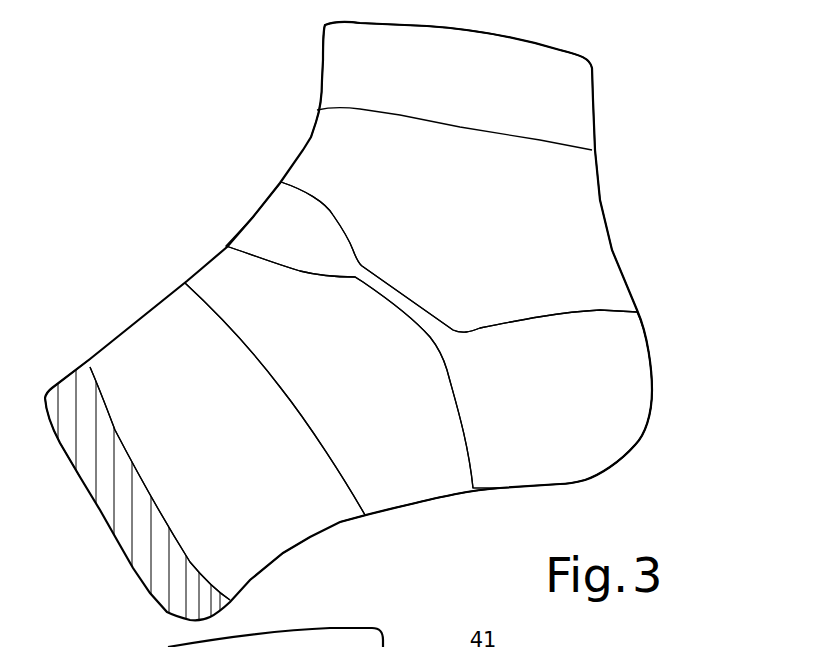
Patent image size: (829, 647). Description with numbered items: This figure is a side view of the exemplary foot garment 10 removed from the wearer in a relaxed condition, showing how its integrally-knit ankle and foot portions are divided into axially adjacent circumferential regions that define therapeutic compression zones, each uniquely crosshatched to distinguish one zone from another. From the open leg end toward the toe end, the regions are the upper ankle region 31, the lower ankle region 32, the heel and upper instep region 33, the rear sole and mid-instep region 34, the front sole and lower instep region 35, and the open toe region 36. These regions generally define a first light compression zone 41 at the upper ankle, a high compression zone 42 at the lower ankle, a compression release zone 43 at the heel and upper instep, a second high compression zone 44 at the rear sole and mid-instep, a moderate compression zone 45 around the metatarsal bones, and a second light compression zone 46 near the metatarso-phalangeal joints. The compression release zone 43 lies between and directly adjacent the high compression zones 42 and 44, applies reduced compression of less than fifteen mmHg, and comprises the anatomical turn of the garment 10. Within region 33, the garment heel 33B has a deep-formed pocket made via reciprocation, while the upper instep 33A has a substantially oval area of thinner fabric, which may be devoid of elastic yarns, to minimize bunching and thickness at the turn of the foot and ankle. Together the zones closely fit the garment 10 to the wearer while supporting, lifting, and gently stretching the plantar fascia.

The foot garment 10 is at (165, 152).
The upper ankle region 31 is at (353, 75).
The lower ankle region 32 is at (328, 129).
The heel and upper instep region 33 is at (568, 485).
The upper instep 33A is at (287, 230).
The garment heel 33B is at (620, 413).
The rear sole and mid-instep region 34 is at (224, 274).
The front sole and lower instep region 35 is at (170, 335).
The open toe region 36 is at (70, 382).
The first light compression zone 41 is at (594, 105).
The high compression zone 42 is at (577, 230).
The compression release zone 43 is at (623, 350).
The high compression zone 44 is at (420, 495).
The moderate compression zone 45 is at (298, 532).
The second light compression zone 46 is at (113, 515).